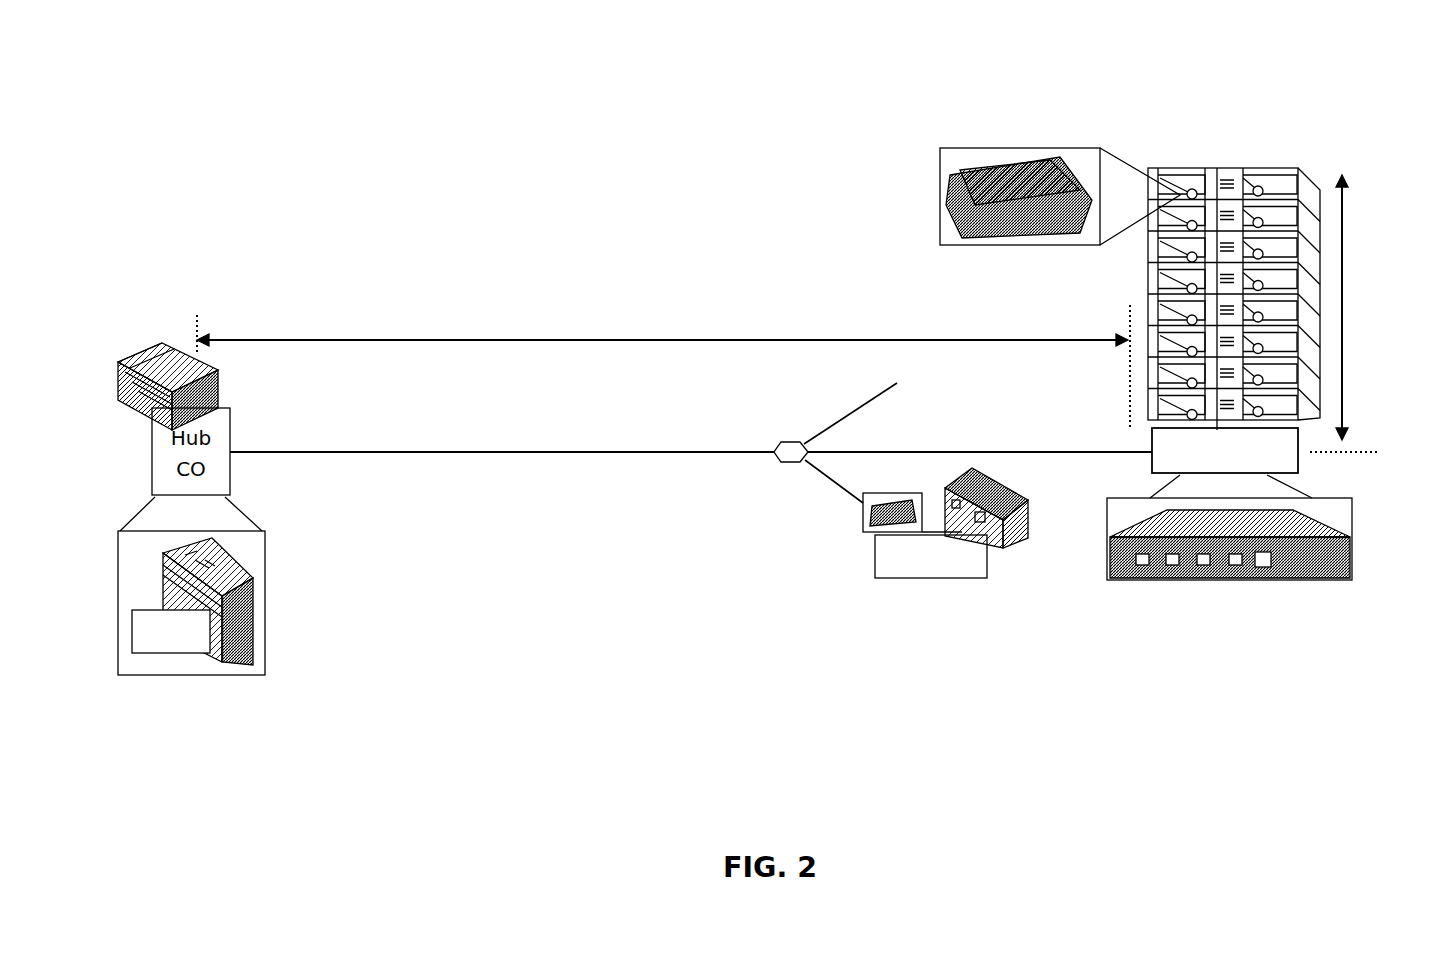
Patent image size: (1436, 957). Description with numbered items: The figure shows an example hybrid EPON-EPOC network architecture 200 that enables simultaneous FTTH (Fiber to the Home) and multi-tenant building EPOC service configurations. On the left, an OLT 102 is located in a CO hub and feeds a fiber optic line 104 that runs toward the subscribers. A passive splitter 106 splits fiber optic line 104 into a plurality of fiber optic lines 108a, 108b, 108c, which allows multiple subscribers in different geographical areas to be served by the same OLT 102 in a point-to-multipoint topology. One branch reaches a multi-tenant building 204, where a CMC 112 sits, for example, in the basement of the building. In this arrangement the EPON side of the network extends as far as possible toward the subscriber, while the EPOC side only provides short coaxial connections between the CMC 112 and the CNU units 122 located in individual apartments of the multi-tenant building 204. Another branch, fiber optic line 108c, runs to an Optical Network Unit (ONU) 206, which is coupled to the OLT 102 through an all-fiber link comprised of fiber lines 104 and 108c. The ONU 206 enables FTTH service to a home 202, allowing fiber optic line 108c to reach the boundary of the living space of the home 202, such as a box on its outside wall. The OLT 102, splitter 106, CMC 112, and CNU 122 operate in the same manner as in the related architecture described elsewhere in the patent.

The hybrid EPON-EPOC network architecture 200 is at (1420, 73).
The OLT 102 is at (265, 612).
The fiber optic line 104 is at (382, 455).
The passive splitter 106 is at (778, 460).
The fiber optic line 108a is at (940, 451).
The fiber optic line 108b is at (833, 422).
The fiber optic line 108c is at (830, 479).
The CMC 112 is at (1107, 543).
The CNU 122 is at (1041, 146).
The home 202 is at (1012, 548).
The multi-tenant building 204 is at (1300, 168).
The Optical Network Unit (ONU) 206 is at (870, 537).